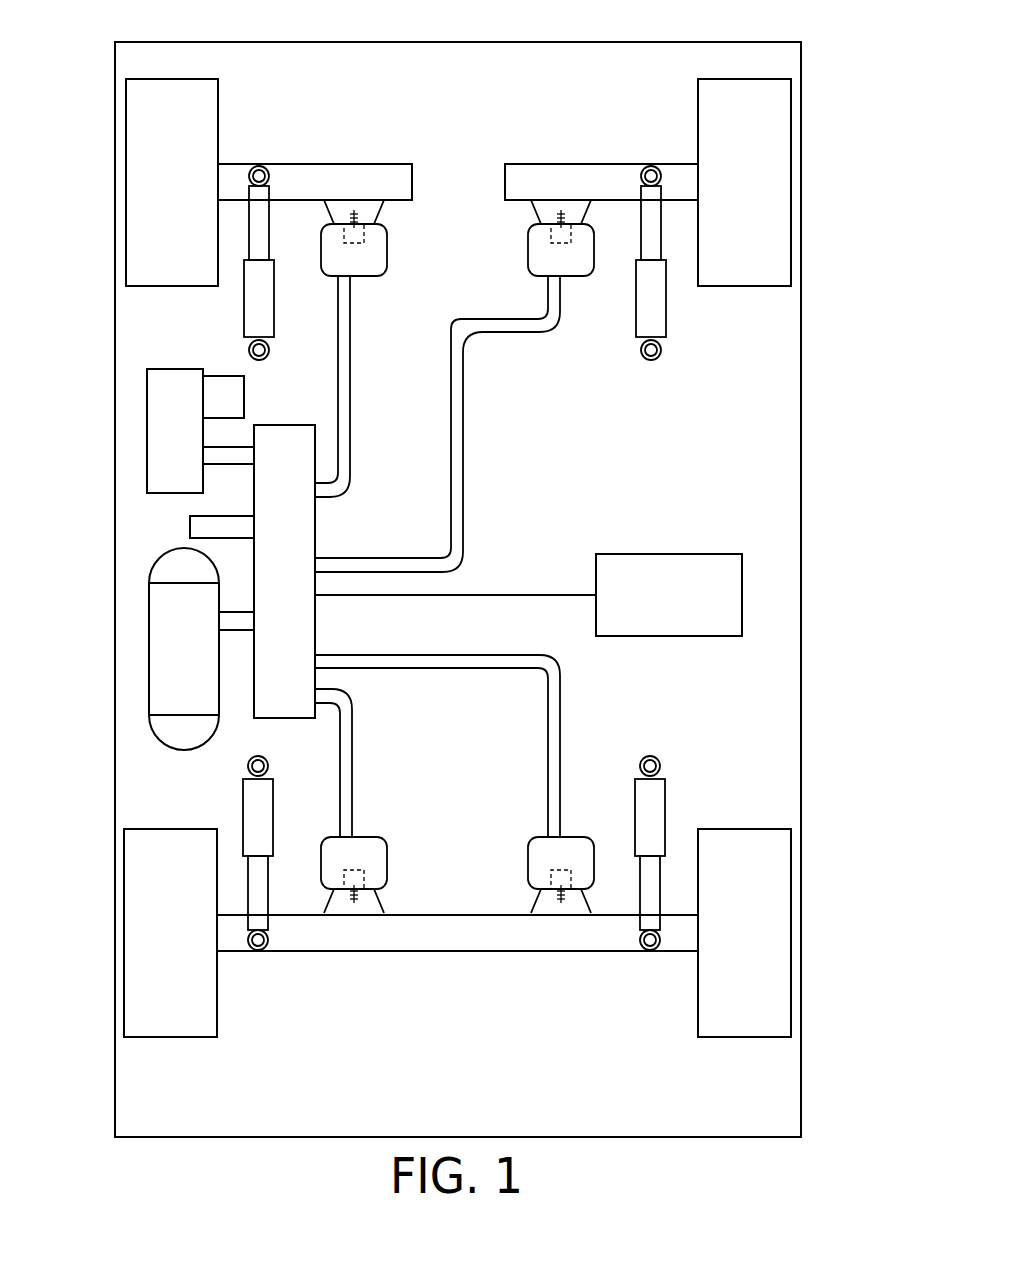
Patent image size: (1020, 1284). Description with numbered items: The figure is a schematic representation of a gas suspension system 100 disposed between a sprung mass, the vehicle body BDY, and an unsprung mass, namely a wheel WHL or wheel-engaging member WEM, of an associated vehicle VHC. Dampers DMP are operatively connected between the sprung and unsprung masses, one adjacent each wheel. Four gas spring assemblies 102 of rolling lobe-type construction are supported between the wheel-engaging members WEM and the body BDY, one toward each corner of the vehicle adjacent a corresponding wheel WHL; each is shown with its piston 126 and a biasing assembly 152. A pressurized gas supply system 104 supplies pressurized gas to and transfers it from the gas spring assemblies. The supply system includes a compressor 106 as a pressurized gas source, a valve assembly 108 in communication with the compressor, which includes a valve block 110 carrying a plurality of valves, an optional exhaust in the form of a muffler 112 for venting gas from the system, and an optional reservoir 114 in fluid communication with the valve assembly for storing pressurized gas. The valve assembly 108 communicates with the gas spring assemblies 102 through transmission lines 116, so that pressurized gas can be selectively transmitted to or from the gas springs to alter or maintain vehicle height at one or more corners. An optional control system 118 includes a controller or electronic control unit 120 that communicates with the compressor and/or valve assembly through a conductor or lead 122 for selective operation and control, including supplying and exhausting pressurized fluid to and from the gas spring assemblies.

The gas suspension system 100 is at (766, 401).
The gas spring assembly 102 is at (375, 280).
The pressurized gas supply system 104 is at (150, 545).
The compressor 106 is at (147, 427).
The valve assembly 108 is at (316, 612).
The valve block 110 is at (317, 535).
The muffler 112 is at (198, 523).
The reservoir 114 is at (160, 676).
The transmission lines 116 is at (352, 422).
The control system 118 is at (680, 510).
The controller or electronic control unit (ECU) 120 is at (691, 606).
The conductor or lead 122 is at (462, 593).
The piston 126 is at (383, 210).
The biasing assembly 152 is at (355, 215).
The wheel WHL is at (155, 135).
The wheel-engaging member WEM is at (330, 163).
The damper DMP is at (258, 315).
The vehicle body BDY is at (532, 42).
The vehicle VHC is at (804, 73).